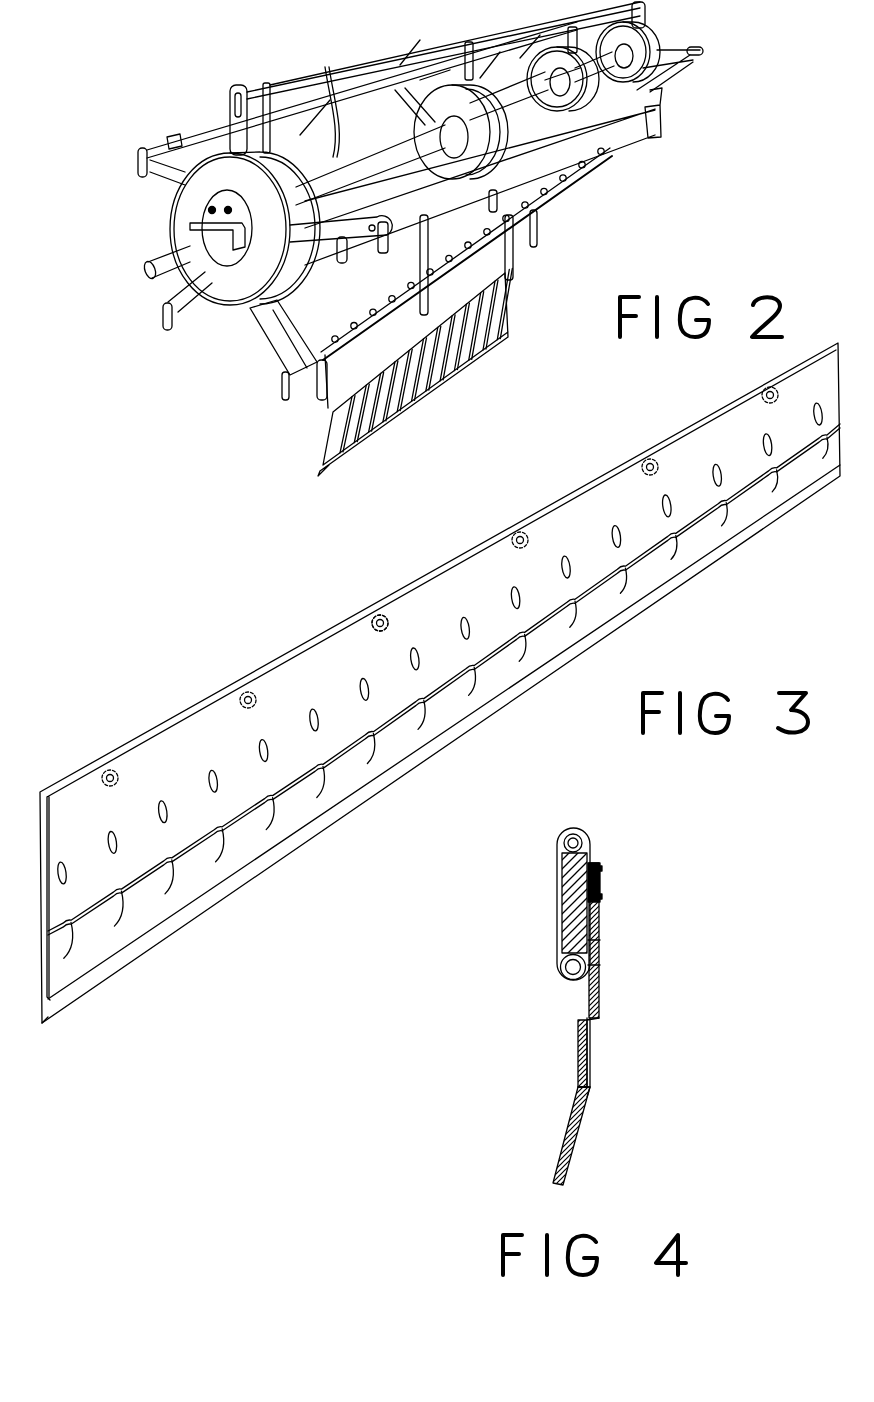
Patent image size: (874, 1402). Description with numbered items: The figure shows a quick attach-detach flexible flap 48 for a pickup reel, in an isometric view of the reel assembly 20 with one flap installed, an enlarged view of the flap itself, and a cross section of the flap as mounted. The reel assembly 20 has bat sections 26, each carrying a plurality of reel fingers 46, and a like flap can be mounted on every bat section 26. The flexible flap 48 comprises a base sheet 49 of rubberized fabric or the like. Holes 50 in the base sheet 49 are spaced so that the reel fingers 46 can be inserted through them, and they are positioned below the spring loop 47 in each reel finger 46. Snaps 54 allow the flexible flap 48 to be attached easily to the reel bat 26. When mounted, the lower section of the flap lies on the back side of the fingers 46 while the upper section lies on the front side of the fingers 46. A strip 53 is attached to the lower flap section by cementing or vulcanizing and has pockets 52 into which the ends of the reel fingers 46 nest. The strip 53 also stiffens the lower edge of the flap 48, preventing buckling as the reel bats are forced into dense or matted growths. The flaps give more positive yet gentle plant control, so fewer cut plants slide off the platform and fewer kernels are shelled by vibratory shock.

In FIG. 2, the reel assembly 20 is at (420, 239).
In FIG. 2, the bat section 26 is at (567, 190).
In FIG. 4, the bat section 26 is at (568, 880).
In FIG. 2, the reel finger 46 is at (427, 265).
In FIG. 4, the reel finger 46 is at (587, 1024).
In FIG. 4, the spring loop 47 is at (560, 975).
In FIG. 2, the flexible flap 48 is at (432, 375).
In FIG. 3, the flexible flap 48 is at (440, 683).
In FIG. 3, the base sheet 49 is at (486, 548).
In FIG. 4, the base sheet 49 is at (600, 955).
In FIG. 3, the holes 50 is at (567, 560).
In FIG. 4, the holes 50 is at (578, 1028).
In FIG. 3, the pockets 52 is at (520, 647).
In FIG. 4, the pockets 52 is at (592, 1098).
In FIG. 3, the strip 53 is at (495, 688).
In FIG. 4, the strip 53 is at (585, 1125).
In FIG. 3, the snaps 54 is at (393, 622).
In FIG. 4, the snaps 54 is at (600, 892).